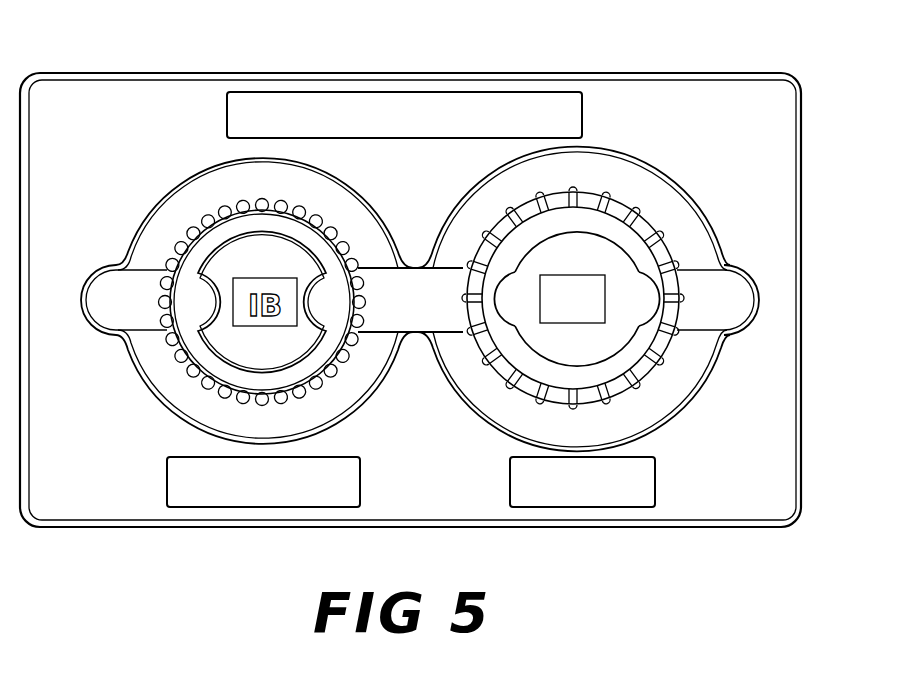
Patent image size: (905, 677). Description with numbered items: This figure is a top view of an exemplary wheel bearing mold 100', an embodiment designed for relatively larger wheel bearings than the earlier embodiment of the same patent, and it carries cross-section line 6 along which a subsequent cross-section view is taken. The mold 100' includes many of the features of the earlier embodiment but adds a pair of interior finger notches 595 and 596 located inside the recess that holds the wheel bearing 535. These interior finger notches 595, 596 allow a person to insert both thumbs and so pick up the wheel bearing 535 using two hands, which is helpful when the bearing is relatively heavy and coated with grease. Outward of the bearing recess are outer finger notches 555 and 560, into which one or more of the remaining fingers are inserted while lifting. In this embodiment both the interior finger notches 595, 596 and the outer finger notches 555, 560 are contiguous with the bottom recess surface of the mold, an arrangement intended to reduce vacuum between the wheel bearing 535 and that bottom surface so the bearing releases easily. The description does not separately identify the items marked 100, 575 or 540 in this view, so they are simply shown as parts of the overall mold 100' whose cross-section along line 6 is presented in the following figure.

The wheel bearing mold 100' is at (410, 268).
The dual rotary indicator device 100 is at (410, 300).
The outer housing rim 575 is at (645, 160).
The wheel bearing 535 is at (612, 238).
The knurled ring 540 is at (657, 252).
The outer finger notch 555 is at (720, 302).
The interior finger notch 595 is at (628, 308).
The interior finger notch 596 is at (522, 298).
The outer finger notch 560 is at (442, 315).
The cross-section line 6 is at (452, 300).